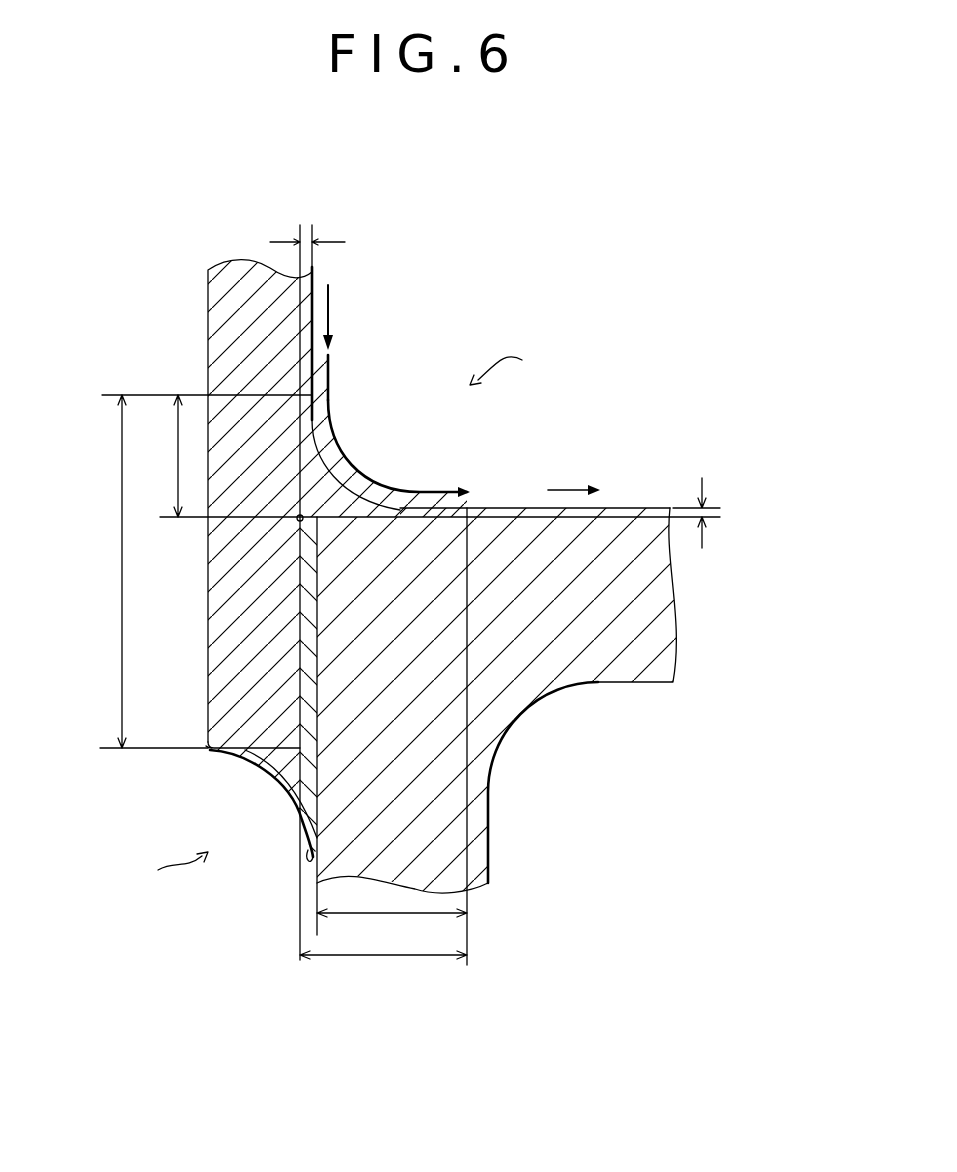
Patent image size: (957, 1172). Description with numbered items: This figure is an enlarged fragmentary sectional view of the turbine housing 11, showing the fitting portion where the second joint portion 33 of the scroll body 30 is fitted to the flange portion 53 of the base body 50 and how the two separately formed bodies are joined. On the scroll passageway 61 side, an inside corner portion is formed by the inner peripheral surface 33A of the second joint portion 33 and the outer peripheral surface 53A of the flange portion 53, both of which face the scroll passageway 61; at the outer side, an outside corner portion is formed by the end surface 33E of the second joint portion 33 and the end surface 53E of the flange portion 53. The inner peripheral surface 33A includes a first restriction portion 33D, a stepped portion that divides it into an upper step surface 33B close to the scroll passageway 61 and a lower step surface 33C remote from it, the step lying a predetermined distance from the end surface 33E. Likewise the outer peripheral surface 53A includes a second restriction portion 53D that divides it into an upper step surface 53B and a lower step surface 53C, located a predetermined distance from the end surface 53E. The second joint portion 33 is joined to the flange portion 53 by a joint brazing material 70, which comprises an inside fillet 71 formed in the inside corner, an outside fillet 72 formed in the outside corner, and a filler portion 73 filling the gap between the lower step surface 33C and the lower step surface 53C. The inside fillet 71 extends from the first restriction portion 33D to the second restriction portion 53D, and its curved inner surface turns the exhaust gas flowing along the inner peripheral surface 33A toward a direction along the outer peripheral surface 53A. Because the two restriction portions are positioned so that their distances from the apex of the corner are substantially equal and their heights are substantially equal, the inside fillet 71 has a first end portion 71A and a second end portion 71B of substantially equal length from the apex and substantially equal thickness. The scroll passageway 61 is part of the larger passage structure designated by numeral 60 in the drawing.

The turbine housing 11 is at (660, 684).
The scroll body 30 is at (208, 290).
The second joint portion 33 is at (213, 318).
The inner peripheral surface 33A is at (140, 338).
The upper step surface 33B is at (313, 357).
The lower step surface 33C is at (313, 398).
The first restriction portion 33D is at (329, 362).
The end surface 33E is at (228, 752).
The base body 50 is at (663, 508).
The flange portion 53 is at (630, 508).
The outer peripheral surface 53A is at (641, 770).
The upper step surface 53B is at (553, 513).
The lower step surface 53C is at (472, 513).
The second restriction portion 53D is at (480, 510).
The end surface 53E is at (317, 838).
The passage 60 is at (607, 252).
The scroll passageway 61 is at (537, 252).
The joint brazing material 70 is at (258, 770).
The inside fillet 71 is at (357, 495).
The first end portion 71A is at (312, 398).
The second end portion 71B is at (463, 510).
The outside fillet 72 is at (287, 790).
The filler portion 73 is at (312, 693).